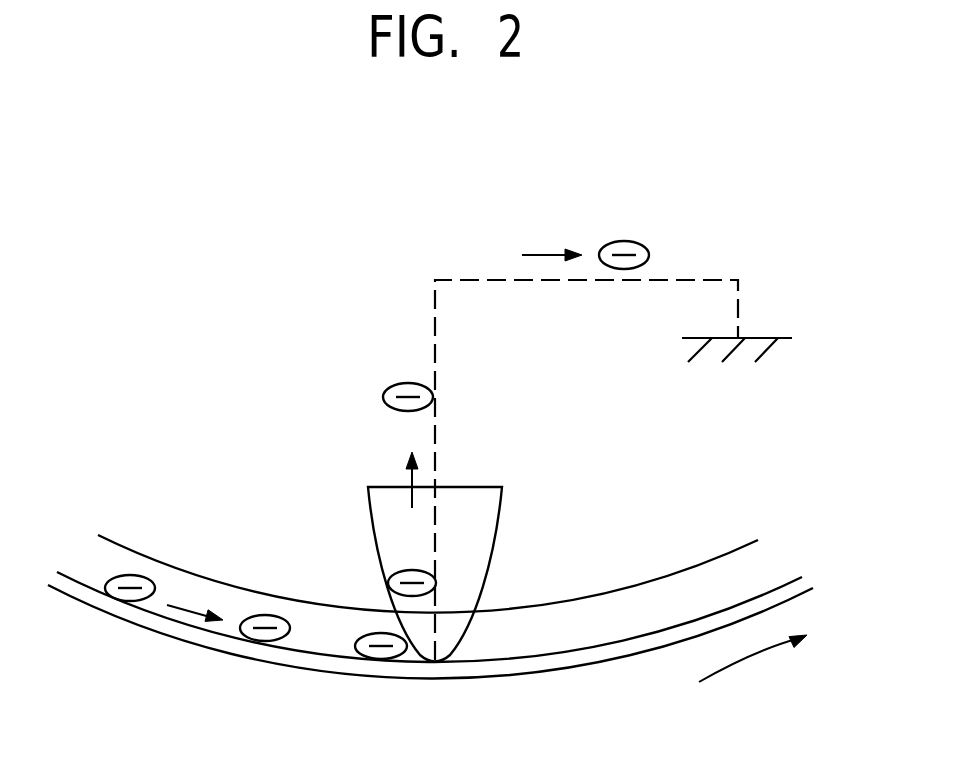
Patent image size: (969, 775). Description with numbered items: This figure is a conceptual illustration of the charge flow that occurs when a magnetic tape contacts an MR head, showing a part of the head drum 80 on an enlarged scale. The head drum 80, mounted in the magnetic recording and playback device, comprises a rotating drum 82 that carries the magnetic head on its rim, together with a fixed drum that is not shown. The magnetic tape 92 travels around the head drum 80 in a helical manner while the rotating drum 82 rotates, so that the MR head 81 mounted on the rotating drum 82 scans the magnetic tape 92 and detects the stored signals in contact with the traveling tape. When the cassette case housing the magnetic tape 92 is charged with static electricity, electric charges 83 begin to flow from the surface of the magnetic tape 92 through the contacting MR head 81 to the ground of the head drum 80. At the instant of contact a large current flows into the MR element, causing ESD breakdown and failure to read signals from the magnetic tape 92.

The head drum 80 is at (243, 290).
The MR head 81 is at (480, 530).
The rotating drum 82 is at (196, 550).
The electric charges 83 is at (288, 633).
The magnetic tape 92 is at (587, 667).